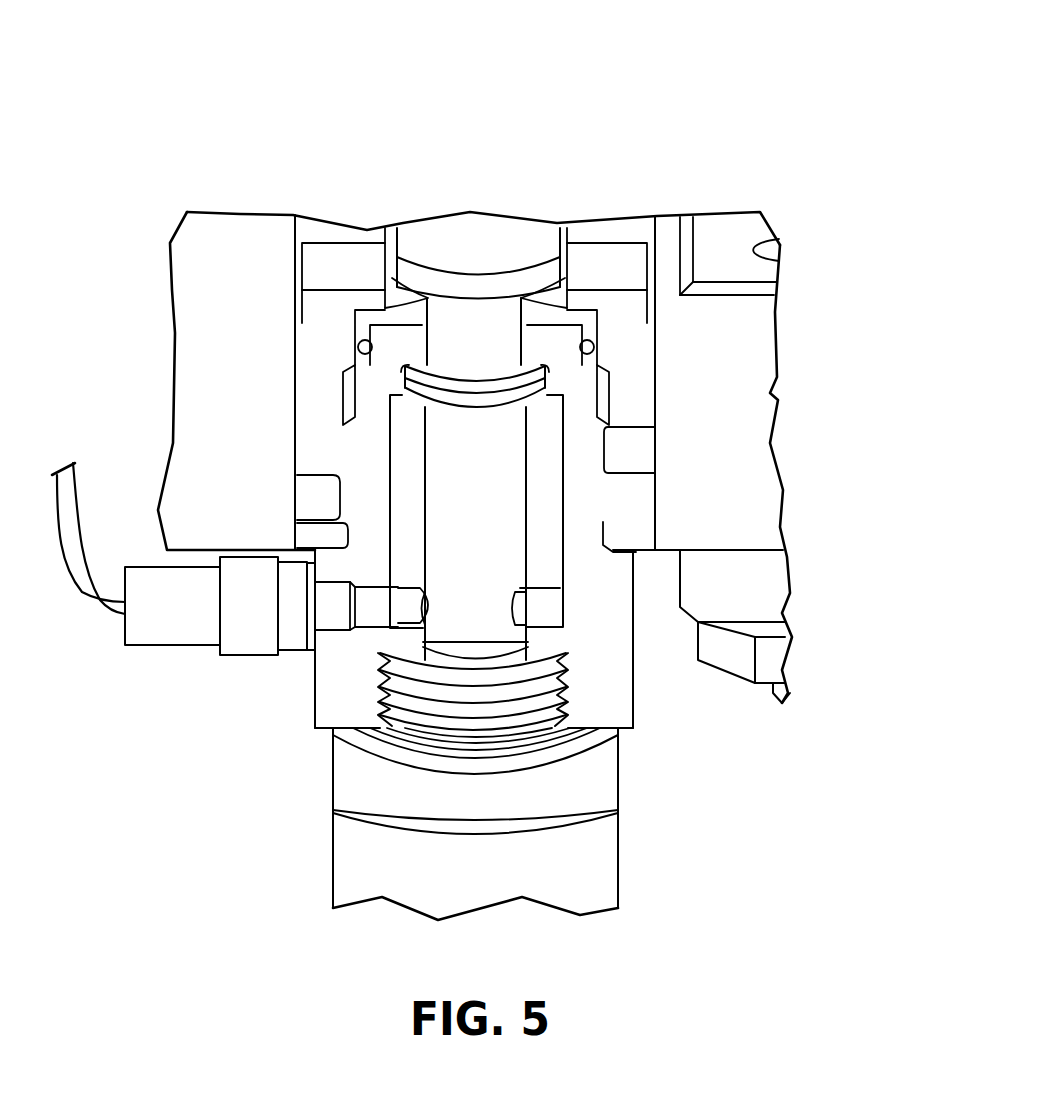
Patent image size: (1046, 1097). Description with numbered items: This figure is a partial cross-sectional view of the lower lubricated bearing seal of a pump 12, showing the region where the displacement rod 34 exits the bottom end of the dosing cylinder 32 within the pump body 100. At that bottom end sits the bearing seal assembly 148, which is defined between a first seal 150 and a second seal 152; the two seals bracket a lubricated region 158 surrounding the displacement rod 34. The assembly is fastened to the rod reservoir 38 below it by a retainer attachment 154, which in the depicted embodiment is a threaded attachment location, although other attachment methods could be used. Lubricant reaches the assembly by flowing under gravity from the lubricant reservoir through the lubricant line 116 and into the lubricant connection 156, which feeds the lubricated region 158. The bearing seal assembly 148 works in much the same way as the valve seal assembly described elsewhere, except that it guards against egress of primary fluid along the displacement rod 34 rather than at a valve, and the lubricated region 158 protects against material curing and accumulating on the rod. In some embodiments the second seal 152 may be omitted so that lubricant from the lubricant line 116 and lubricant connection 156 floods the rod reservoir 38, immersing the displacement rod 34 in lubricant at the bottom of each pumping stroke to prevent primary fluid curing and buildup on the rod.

The valve assembly 12 is at (700, 84).
The cylinder 32 is at (325, 268).
The displacement rod 34 is at (510, 335).
The rod reservoir 38 is at (360, 840).
The pump body 100 is at (710, 513).
The lubricant line 116 is at (83, 590).
The bearing seal assembly 148 is at (518, 555).
The first seal 150 is at (493, 402).
The second seal 152 is at (513, 658).
The retainer attachment 154 is at (523, 717).
The lubricant connection 156 is at (157, 622).
The lubricated region 158 is at (512, 455).